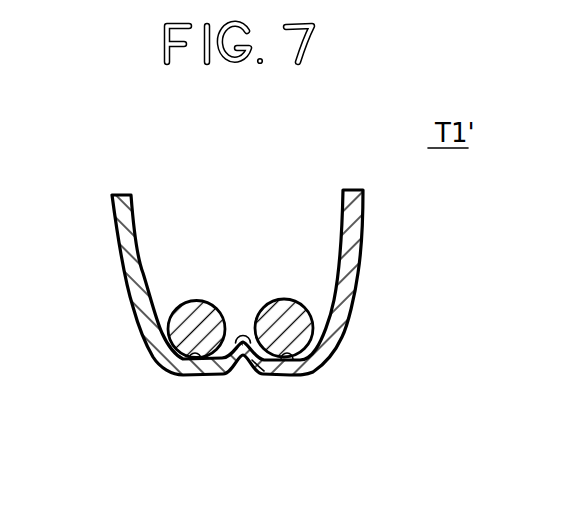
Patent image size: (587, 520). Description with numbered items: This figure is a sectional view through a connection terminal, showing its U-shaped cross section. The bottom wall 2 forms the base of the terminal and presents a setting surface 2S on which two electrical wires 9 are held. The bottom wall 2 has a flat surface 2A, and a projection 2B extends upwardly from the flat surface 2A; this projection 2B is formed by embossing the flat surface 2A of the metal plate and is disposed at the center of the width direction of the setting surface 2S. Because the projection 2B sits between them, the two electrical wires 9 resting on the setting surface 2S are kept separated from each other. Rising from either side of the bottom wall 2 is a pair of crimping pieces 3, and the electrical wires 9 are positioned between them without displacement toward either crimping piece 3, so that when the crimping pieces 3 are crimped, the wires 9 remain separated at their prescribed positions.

The bottom wall 2 is at (326, 368).
The crimping piece 3 is at (125, 254).
The electrical wire 9 is at (284, 320).
The flat surface 2A is at (195, 357).
The projection 2B is at (243, 343).
The setting surface 2S is at (258, 368).